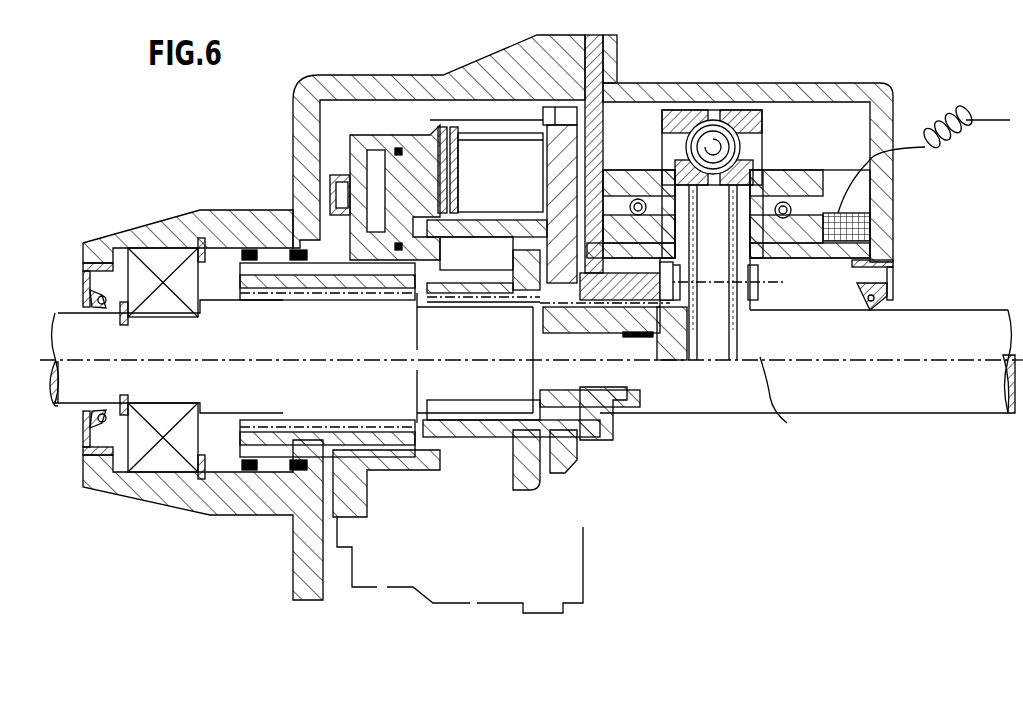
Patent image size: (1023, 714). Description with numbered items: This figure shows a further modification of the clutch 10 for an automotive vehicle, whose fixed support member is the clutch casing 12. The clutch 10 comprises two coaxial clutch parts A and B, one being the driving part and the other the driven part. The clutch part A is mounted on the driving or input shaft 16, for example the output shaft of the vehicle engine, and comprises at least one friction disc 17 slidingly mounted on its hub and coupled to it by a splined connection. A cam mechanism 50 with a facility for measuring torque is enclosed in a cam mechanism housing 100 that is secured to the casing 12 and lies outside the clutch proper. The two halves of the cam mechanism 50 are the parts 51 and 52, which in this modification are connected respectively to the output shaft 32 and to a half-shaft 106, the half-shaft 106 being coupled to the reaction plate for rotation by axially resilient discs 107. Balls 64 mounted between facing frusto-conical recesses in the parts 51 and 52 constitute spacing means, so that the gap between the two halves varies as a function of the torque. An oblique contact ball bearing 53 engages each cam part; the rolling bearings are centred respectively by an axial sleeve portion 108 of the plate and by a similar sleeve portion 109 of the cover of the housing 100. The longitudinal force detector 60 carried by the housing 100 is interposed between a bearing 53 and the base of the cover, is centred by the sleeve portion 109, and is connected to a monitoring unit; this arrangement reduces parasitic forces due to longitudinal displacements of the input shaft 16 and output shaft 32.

The clutch 10 is at (410, 122).
The clutch casing 12 is at (190, 203).
The input shaft 16 is at (78, 380).
The friction disc 17 is at (473, 210).
The output shaft 32 is at (947, 328).
The cam mechanism 50 is at (651, 122).
The cam mechanism part 51 is at (694, 110).
The cam mechanism part 52 is at (743, 110).
The oblique contact ball bearing 53 is at (610, 167).
The longitudinal force detector 60 is at (870, 225).
The balls 64 is at (807, 173).
The cam mechanism housing 100 is at (683, 78).
The half-shaft 106 is at (623, 318).
The axially resilient discs 107 is at (723, 239).
The axial sleeve portion 108 is at (699, 244).
The sleeve portion 109 is at (800, 252).
The clutch part A is at (480, 310).
The clutch part B is at (583, 449).